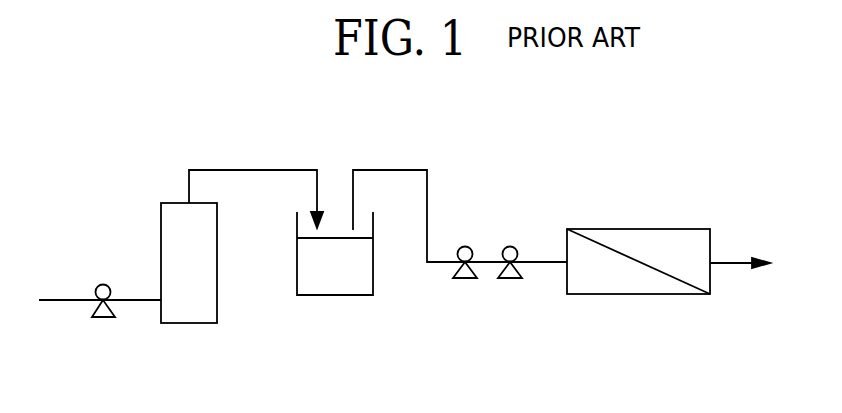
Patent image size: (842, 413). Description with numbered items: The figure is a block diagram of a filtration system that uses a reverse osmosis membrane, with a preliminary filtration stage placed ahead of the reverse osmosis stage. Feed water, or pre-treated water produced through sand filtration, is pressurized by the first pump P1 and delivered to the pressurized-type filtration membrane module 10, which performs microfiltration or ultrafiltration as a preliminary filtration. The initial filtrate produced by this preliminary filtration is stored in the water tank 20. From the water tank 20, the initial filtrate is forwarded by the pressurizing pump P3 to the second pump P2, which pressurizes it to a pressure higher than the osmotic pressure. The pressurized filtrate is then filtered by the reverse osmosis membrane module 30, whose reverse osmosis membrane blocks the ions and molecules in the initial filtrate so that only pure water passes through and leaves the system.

The pressurized-type filtration membrane module 10 is at (161, 218).
The water tank 20 is at (348, 296).
The reverse osmosis membrane module 30 is at (672, 229).
The first pump P1 is at (104, 316).
The second pump P2 is at (510, 280).
The pressurizing pump P3 is at (465, 280).